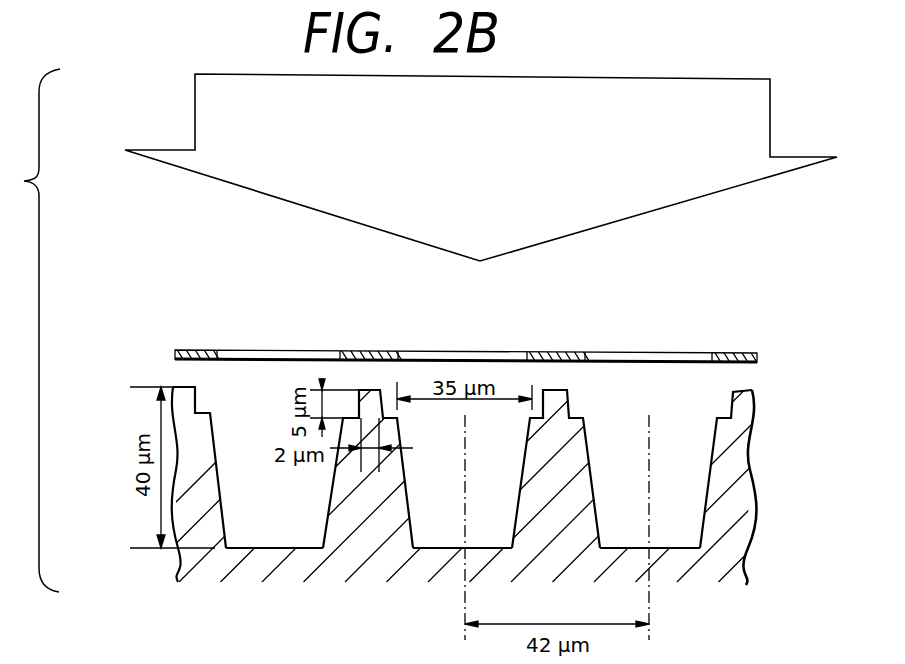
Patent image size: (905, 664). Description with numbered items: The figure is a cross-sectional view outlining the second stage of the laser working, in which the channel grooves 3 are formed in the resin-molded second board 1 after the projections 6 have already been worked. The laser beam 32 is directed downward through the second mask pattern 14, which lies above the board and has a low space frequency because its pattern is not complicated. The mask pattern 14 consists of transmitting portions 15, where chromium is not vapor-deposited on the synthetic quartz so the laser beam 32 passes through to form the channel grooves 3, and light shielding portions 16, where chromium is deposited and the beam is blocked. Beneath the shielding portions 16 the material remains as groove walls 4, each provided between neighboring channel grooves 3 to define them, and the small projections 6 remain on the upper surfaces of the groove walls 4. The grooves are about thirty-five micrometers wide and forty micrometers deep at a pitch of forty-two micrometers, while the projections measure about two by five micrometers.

The second board 1 is at (500, 486).
The channel grooves 3 is at (247, 548).
The groove walls 4 is at (353, 420).
The projections 6 is at (558, 396).
The second mask pattern 14 is at (466, 321).
The transmitting portions 15 is at (478, 352).
The light shielding portions 16 is at (199, 350).
The laser beam 32 is at (762, 126).